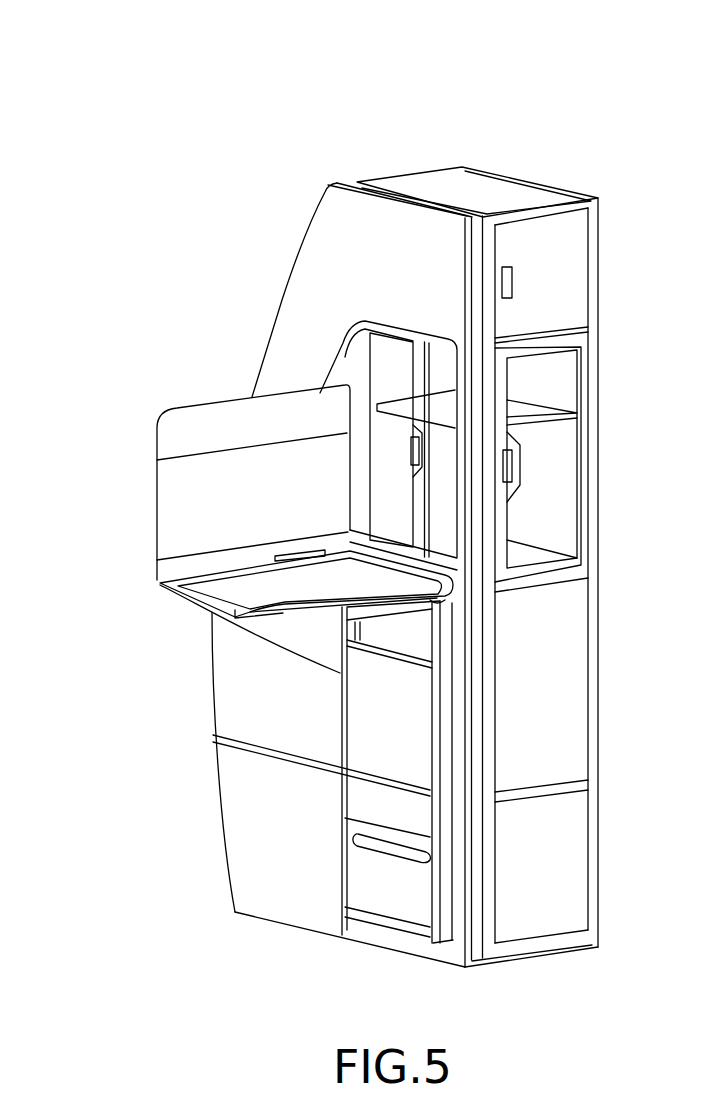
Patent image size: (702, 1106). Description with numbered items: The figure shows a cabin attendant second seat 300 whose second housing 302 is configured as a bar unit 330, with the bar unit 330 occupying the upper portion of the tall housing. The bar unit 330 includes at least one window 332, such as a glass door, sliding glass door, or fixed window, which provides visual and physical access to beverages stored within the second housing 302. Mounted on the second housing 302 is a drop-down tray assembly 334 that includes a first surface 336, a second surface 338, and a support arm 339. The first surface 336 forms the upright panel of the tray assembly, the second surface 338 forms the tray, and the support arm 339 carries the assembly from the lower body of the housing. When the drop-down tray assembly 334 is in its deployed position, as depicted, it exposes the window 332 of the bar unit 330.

The second seat 300 is at (429, 491).
The second housing 302 is at (338, 268).
The bar unit 330 is at (562, 388).
The window 332 is at (347, 358).
The drop-down tray assembly 334 is at (245, 674).
The first surface 336 is at (157, 420).
The second surface 338 is at (237, 592).
The support arm 339 is at (297, 643).